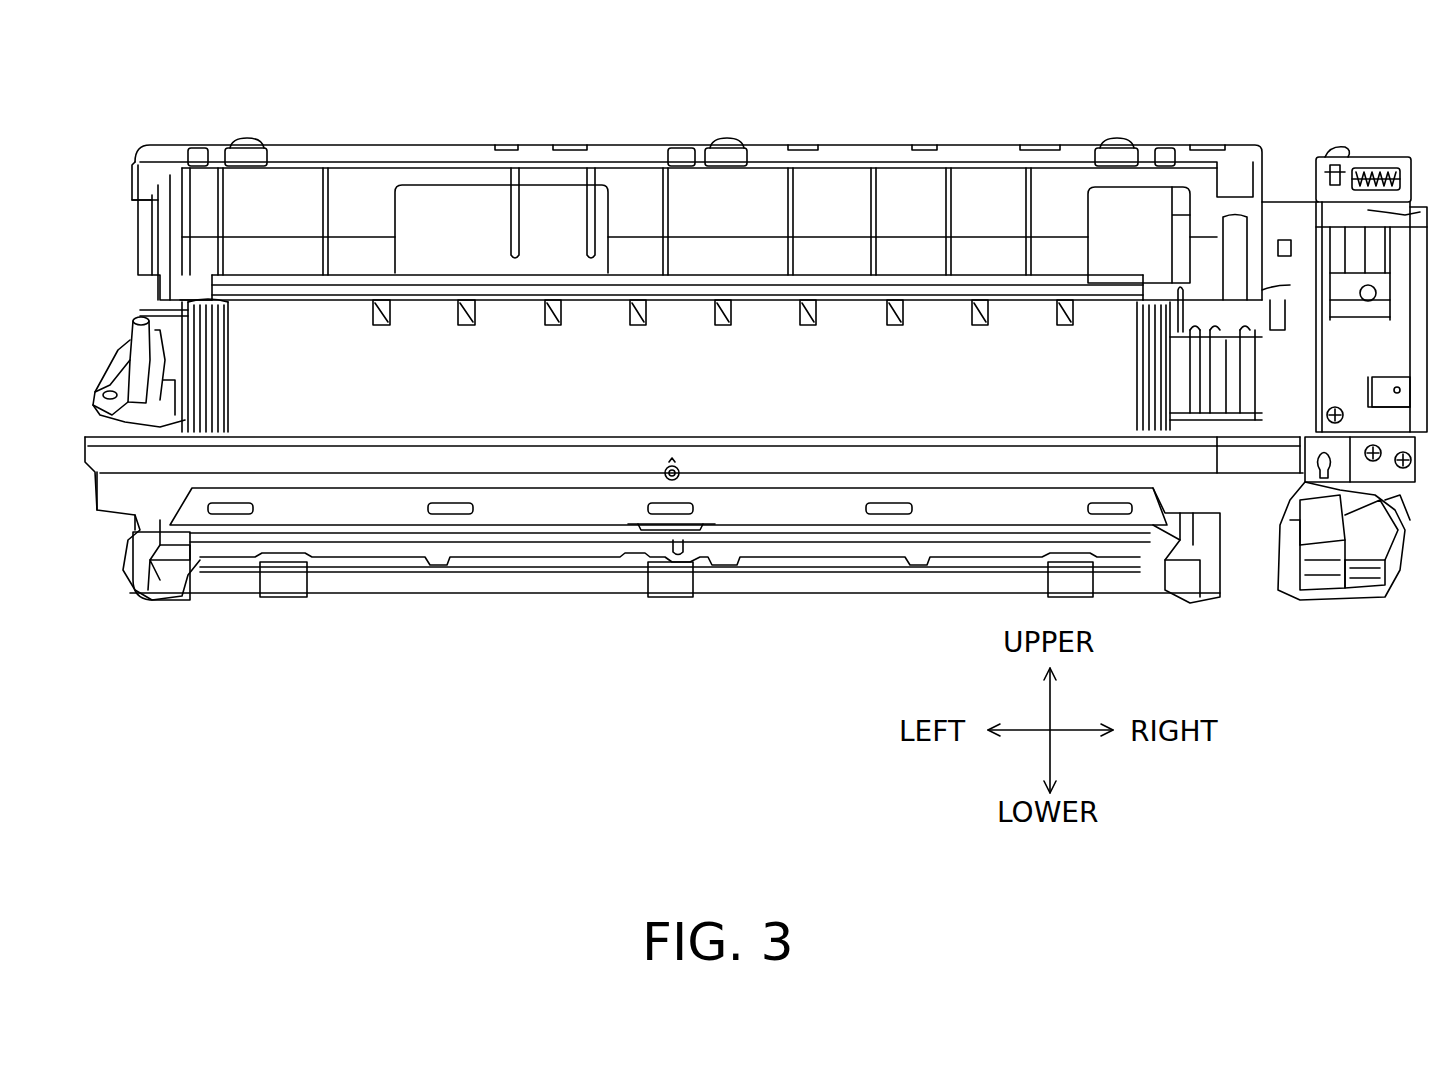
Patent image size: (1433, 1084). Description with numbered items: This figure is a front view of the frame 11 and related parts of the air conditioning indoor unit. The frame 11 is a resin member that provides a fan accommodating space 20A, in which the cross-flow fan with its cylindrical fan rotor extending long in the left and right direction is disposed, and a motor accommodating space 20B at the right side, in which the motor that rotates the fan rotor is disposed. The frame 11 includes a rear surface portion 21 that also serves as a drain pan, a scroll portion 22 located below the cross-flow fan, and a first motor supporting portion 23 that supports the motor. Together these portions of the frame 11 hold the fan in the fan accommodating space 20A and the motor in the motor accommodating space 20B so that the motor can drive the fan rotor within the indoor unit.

The frame 11 is at (855, 146).
The fan accommodating space 20A is at (770, 335).
The motor accommodating space 20B is at (1204, 292).
The rear surface portion 21 is at (1005, 168).
The scroll portion 22 is at (252, 346).
The first motor supporting portion 23 is at (1220, 405).